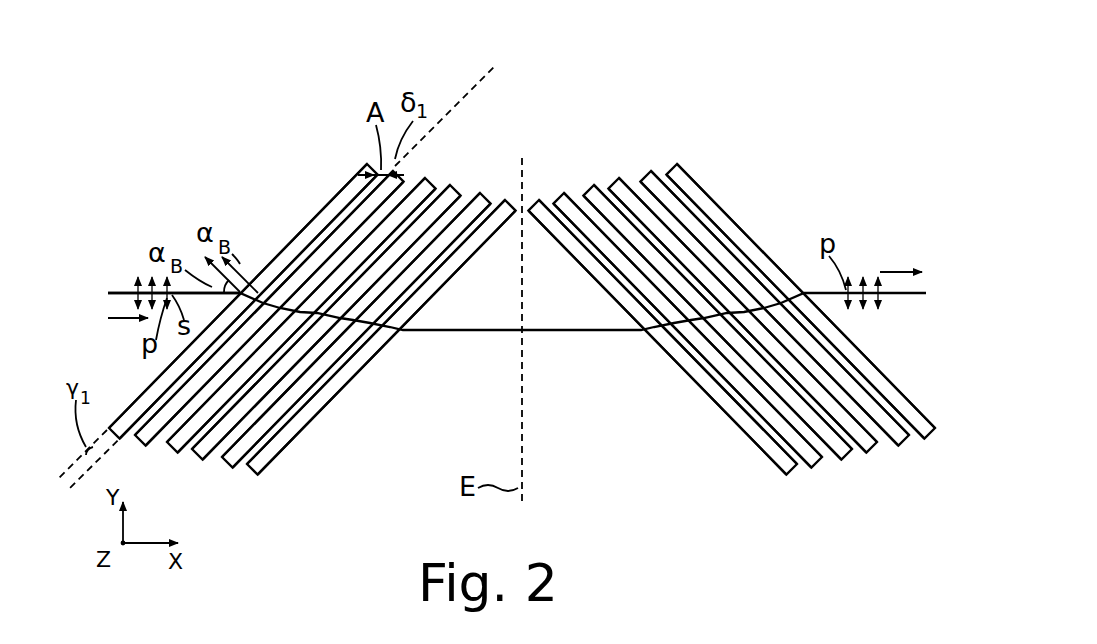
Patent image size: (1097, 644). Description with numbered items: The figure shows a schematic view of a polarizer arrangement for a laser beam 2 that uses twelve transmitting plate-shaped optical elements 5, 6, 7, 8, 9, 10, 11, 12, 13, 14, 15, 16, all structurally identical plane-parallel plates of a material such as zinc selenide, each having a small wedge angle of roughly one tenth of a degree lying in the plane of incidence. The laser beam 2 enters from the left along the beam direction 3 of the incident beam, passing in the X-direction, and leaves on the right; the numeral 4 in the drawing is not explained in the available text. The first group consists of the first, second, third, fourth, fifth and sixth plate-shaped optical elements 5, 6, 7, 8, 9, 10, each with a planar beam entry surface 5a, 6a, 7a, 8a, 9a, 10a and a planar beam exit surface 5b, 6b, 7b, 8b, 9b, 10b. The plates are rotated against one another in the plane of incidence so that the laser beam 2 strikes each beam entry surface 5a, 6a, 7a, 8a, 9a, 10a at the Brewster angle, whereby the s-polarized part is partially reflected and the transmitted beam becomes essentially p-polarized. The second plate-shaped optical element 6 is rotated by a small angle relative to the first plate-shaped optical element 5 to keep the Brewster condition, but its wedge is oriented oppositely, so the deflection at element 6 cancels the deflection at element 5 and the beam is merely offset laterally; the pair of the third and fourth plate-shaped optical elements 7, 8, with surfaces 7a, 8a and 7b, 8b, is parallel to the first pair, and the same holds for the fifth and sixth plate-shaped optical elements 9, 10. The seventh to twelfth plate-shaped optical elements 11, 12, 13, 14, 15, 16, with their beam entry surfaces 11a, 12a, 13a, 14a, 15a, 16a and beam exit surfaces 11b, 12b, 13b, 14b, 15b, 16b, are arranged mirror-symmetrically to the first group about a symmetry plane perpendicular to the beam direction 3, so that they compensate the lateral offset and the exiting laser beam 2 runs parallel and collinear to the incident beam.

The laser beam 2 is at (118, 291).
The beam direction 3 is at (118, 320).
The output direction 4 is at (895, 271).
The first plate-shaped optical element 5 is at (355, 183).
The beam entry surface 5a is at (355, 185).
The beam exit surface 5b is at (328, 214).
The second plate-shaped optical element 6 is at (404, 190).
The beam entry surface 6a is at (323, 226).
The beam exit surface 6b is at (307, 250).
The third plate-shaped optical element 7 is at (432, 182).
The beam entry surface 7a is at (193, 395).
The beam exit surface 7b is at (235, 395).
The fourth plate-shaped optical element 8 is at (456, 188).
The beam entry surface 8a is at (278, 405).
The beam exit surface 8b is at (305, 365).
The fifth plate-shaped optical element 9 is at (485, 197).
The beam entry surface 9a is at (362, 342).
The beam exit surface 9b is at (407, 340).
The sixth plate-shaped optical element 10 is at (510, 203).
The beam entry surface 10a is at (440, 322).
The beam exit surface 10b is at (468, 265).
The seventh plate-shaped optical element 11 is at (538, 201).
The beam entry surface 11a is at (574, 265).
The beam exit surface 11b is at (600, 322).
The eighth plate-shaped optical element 12 is at (568, 199).
The beam entry surface 12a is at (632, 342).
The beam exit surface 12b is at (685, 345).
The ninth plate-shaped optical element 13 is at (600, 189).
The beam entry surface 13a is at (745, 365).
The beam exit surface 13b is at (752, 405).
The tenth plate-shaped optical element 14 is at (622, 185).
The beam entry surface 14a is at (803, 395).
The beam exit surface 14b is at (845, 395).
The eleventh plate-shaped optical element 15 is at (655, 175).
The beam entry surface 15a is at (863, 423).
The beam exit surface 15b is at (884, 408).
The twelfth plate-shaped optical element 16 is at (697, 180).
The beam entry surface 16a is at (747, 258).
The beam exit surface 16b is at (737, 222).